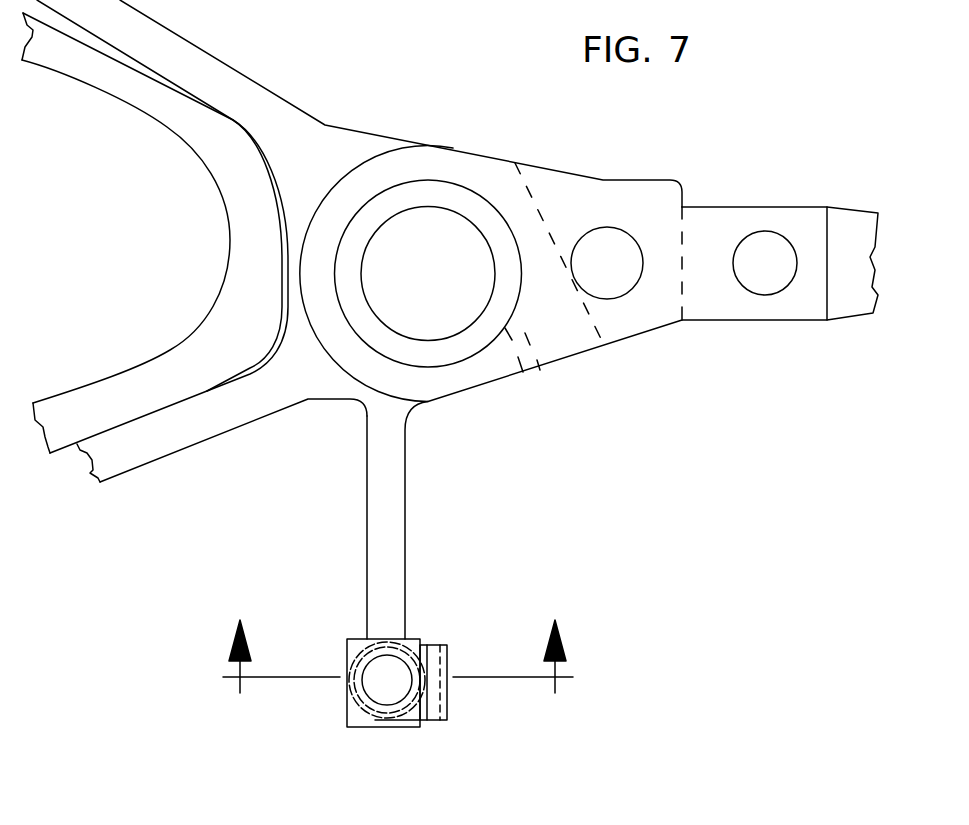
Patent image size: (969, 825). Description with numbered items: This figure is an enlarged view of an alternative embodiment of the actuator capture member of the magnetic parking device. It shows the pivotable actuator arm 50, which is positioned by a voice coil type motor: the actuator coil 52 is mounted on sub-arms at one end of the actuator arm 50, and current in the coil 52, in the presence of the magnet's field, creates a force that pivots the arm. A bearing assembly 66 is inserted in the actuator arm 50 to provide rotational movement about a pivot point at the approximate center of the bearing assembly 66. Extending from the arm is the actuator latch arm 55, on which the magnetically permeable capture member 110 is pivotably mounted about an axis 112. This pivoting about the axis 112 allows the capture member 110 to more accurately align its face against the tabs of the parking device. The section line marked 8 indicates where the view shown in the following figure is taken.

The actuator arm 50 is at (617, 193).
The actuator coil 52 is at (130, 95).
The actuator latch arm 55 is at (392, 500).
The bearing assembly 66 is at (417, 198).
The capture member 110 is at (423, 712).
The axis 112 is at (387, 680).
The section line 8- 8 is at (398, 630).